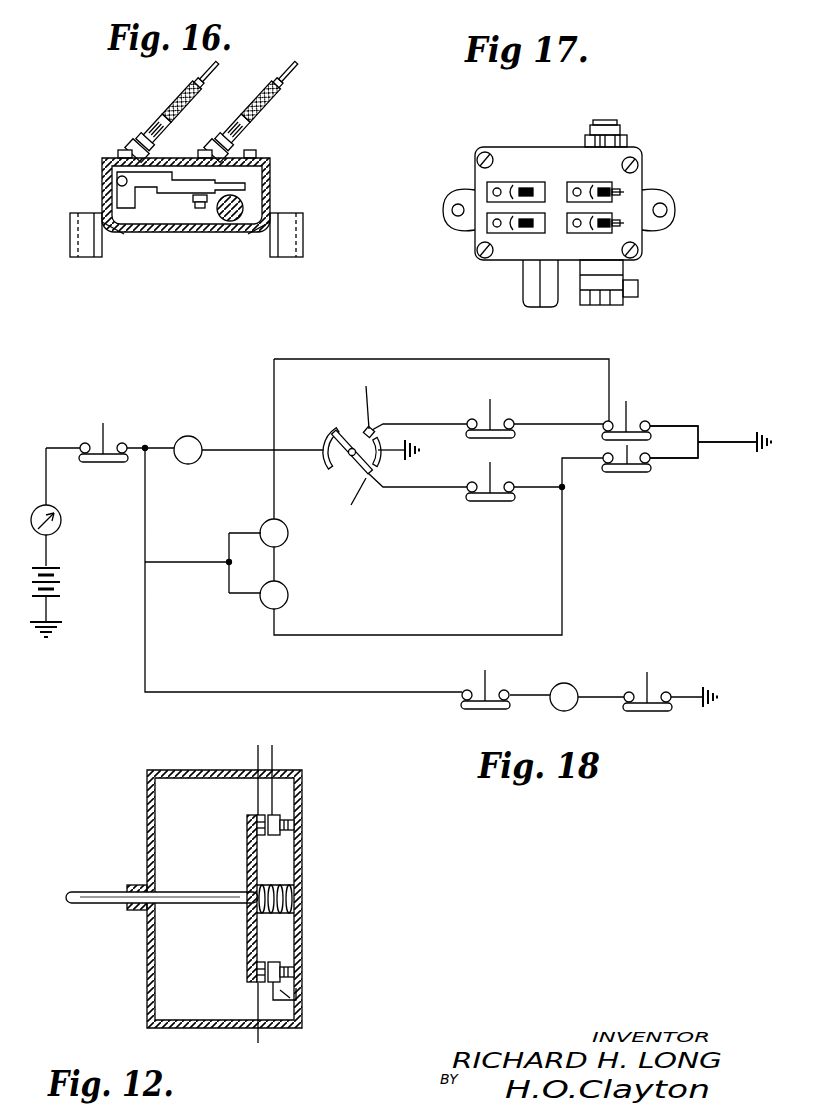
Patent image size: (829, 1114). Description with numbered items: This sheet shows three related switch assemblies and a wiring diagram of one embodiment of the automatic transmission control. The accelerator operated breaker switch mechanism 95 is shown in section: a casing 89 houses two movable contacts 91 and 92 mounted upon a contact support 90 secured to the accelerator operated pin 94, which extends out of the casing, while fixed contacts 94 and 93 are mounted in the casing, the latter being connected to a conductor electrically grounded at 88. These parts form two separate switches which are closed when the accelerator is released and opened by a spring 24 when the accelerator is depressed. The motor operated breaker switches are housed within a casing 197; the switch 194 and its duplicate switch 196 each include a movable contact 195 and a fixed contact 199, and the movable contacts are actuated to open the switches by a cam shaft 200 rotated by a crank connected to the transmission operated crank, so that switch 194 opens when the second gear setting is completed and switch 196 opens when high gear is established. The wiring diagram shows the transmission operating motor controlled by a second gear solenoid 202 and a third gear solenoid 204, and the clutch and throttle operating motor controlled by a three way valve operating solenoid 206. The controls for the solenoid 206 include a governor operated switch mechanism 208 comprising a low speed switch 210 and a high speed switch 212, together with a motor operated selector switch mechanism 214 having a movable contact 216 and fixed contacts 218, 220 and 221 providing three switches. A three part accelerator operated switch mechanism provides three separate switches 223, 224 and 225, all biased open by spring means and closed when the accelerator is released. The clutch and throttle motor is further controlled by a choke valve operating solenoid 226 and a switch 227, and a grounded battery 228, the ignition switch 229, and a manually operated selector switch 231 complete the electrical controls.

In FIG. 16, the casing 197 is at (270, 181).
In FIG. 17, the casing 197 is at (500, 147).
In FIG. 16, the switch lever 195 is at (192, 196).
In FIG. 16, the switch 194 is at (195, 202).
In FIG. 17, the switch 194 is at (568, 235).
In FIG. 16, the fixed contact 199 is at (207, 208).
In FIG. 16, the cam shaft 200 is at (233, 219).
In FIG. 17, the switch 196 is at (577, 185).
In FIG. 18, the manually operated selector switch 231 is at (110, 442).
In FIG. 18, the three way valve operating solenoid 206 is at (197, 439).
In FIG. 18, the ignition switch 229 is at (62, 521).
In FIG. 18, the grounded battery 228 is at (68, 588).
In FIG. 18, the second gear solenoid 202 is at (281, 536).
In FIG. 18, the third gear solenoid 204 is at (281, 596).
In FIG. 18, the selector switch mechanism 214 is at (376, 441).
In FIG. 18, the movable contact 216 is at (348, 428).
In FIG. 18, the fixed contact 218 is at (376, 433).
In FIG. 18, the fixed contact 220 is at (386, 440).
In FIG. 18, the fixed contact 221 is at (360, 468).
In FIG. 18, the switch 225 is at (498, 409).
In FIG. 18, the switch 224 is at (491, 510).
In FIG. 18, the low speed switch 210 is at (633, 427).
In FIG. 18, the high speed switch 212 is at (630, 482).
In FIG. 18, the governor operated switch mechanism 208 is at (657, 446).
In FIG. 18, the switch 223 is at (495, 692).
In FIG. 18, the choke valve operating solenoid 226 is at (571, 684).
In FIG. 18, the switch 227 is at (660, 688).
In FIG. 12, the casing 89 is at (147, 821).
In FIG. 12, the pin 94 is at (103, 899).
In FIG. 12, the plate 90 is at (250, 852).
In FIG. 12, the movable contact 91 is at (257, 813).
In FIG. 12, the movable contact 92 is at (258, 985).
In FIG. 12, the breaker switch mechanism 95 is at (313, 895).
In FIG. 12, the spring 24 is at (295, 914).
In FIG. 12, the fixed contact 93 is at (295, 970).
In FIG. 12, the ground 88 is at (300, 994).